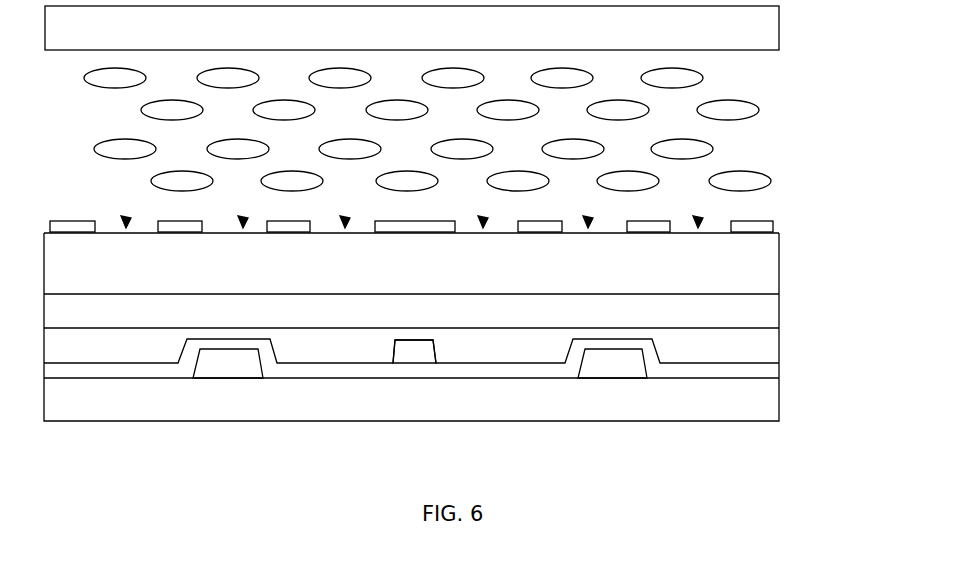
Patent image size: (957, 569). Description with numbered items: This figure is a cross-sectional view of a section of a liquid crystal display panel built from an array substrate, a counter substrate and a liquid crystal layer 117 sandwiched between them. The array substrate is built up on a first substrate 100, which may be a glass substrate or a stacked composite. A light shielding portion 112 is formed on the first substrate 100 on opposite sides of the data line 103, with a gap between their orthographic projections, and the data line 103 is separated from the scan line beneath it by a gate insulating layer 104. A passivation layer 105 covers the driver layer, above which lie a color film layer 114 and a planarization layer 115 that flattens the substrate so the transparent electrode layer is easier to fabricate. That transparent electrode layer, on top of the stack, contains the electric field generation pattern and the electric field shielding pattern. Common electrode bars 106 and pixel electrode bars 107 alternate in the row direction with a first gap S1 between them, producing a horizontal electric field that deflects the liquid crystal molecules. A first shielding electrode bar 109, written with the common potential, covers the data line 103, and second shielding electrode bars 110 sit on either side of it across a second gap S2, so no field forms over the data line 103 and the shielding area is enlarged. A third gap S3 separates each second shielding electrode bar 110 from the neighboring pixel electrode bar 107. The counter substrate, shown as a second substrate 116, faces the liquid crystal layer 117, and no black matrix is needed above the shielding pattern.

The first substrate 100 is at (779, 401).
The data line 103 is at (422, 363).
The gate insulating layer 104 is at (779, 367).
The passivation layer 105 is at (779, 337).
The common electrode bar 106 is at (70, 220).
The pixel electrode bar 107 is at (190, 232).
The first shielding electrode bar 109 is at (412, 229).
The second shielding electrode bar 110 is at (298, 232).
The light shielding portion 112 is at (232, 369).
The color film layer 114 is at (779, 300).
The planarization layer 115 is at (779, 258).
The second substrate 116 is at (779, 33).
The liquid crystal layer 117 is at (759, 109).
The first gap S1 is at (127, 217).
The second gap S2 is at (346, 217).
The third gap S3 is at (244, 217).